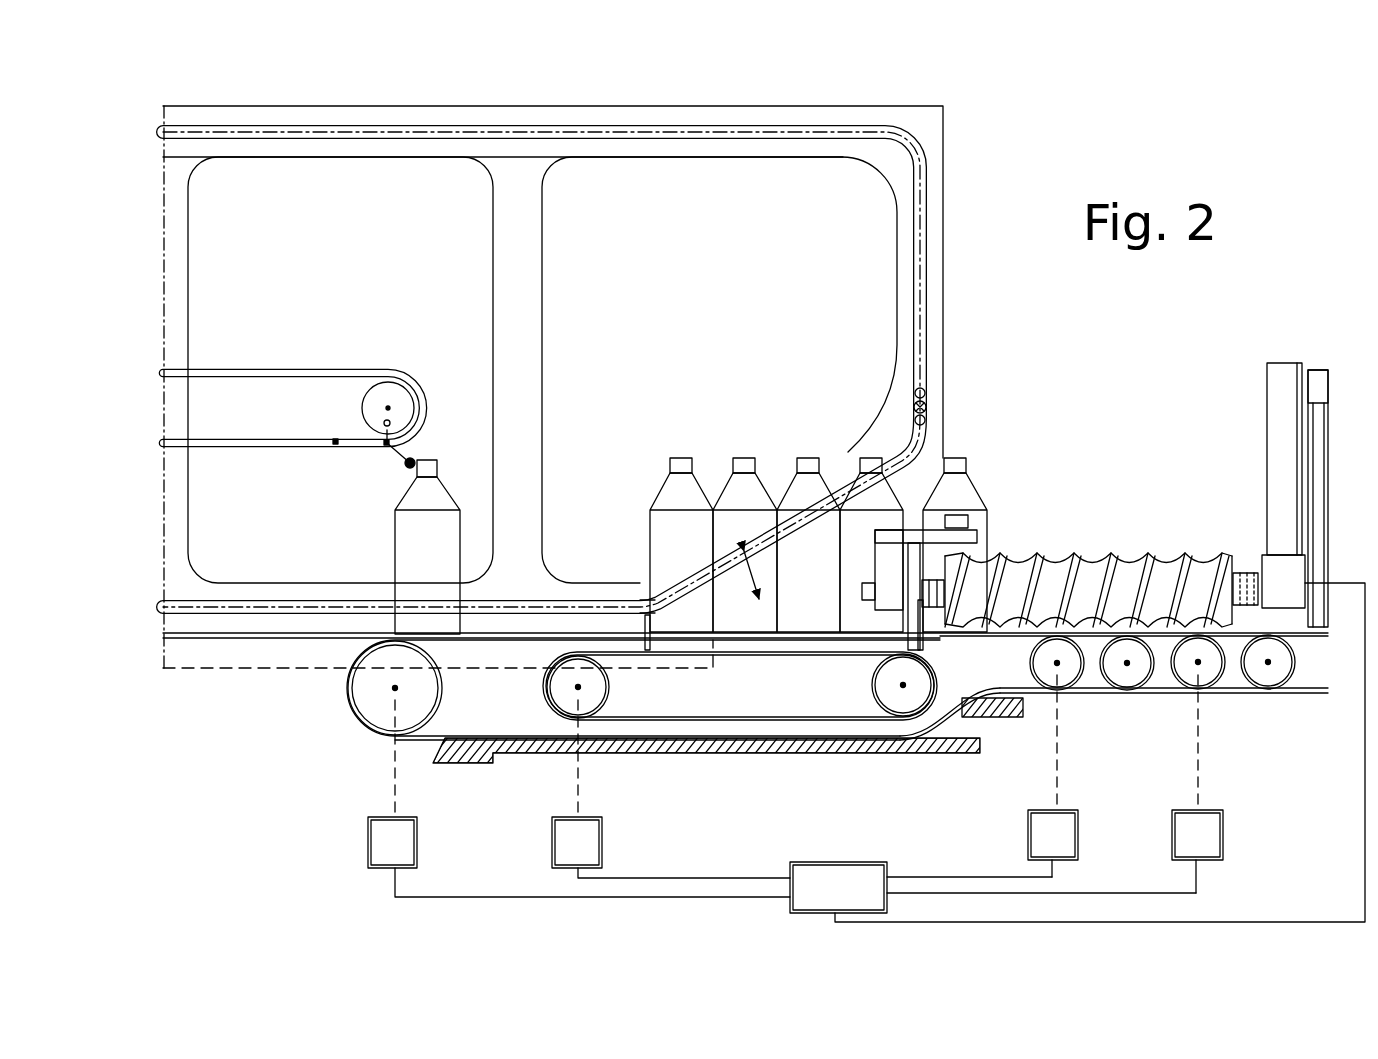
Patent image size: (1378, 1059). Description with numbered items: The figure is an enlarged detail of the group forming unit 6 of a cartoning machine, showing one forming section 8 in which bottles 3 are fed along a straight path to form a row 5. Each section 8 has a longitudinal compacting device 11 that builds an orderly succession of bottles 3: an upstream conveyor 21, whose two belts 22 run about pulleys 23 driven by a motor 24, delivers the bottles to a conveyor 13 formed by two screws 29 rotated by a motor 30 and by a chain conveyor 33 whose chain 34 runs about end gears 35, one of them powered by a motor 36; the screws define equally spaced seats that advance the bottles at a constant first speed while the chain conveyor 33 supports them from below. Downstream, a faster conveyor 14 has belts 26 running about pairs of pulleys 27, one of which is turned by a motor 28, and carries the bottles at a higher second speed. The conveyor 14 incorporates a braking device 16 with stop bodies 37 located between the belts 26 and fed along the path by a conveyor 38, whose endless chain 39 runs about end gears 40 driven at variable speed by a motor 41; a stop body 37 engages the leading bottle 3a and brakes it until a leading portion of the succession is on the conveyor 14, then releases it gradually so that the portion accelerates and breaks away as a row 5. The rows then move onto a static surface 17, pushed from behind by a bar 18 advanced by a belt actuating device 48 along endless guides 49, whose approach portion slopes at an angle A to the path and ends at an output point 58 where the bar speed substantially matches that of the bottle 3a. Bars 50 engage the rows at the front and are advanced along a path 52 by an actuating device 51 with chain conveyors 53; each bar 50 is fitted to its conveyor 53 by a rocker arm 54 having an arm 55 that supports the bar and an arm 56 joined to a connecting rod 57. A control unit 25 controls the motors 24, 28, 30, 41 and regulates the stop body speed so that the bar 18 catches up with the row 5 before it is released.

The bottles 3 is at (430, 495).
The leading bottle 3a is at (960, 466).
The row 5 is at (738, 440).
The group forming unit 6 is at (955, 205).
The forming section 8 is at (810, 332).
The longitudinal compacting device 11 is at (1048, 478).
The conveyor 13 is at (1100, 535).
The conveyor 14 is at (590, 565).
The braking device 16 is at (540, 700).
The static surface 17 is at (248, 640).
The bar 18 is at (928, 407).
The conveyor 21 is at (1320, 705).
The belts 22 is at (1320, 633).
The pulleys 23 is at (1208, 668).
The motor 24 is at (1190, 825).
The control unit 25 is at (843, 885).
The belts 26 is at (525, 632).
The pulleys 27 is at (370, 690).
The motor 28 is at (400, 845).
The screws 29 is at (1115, 578).
The motor 30 is at (1285, 585).
The chain conveyor 33 is at (1125, 680).
The chain 34 is at (1168, 640).
The end gears 35 is at (1062, 668).
The motor 36 is at (1050, 835).
The stop bodies 37 is at (655, 645).
The conveyor 38 is at (943, 690).
The endless chain 39 is at (730, 718).
The end gears 40 is at (592, 690).
The motor 41 is at (585, 838).
The belt actuating device 48 is at (757, 103).
The endless guides 49 is at (817, 133).
The bars 50 is at (412, 462).
The actuating device 51 is at (327, 340).
The path 52 is at (412, 378).
The chain conveyors 53 is at (302, 360).
The rocker arm 54 is at (385, 458).
The arm 55 is at (398, 458).
The arm 56 is at (335, 442).
The connecting rod 57 is at (382, 432).
The output point 58 is at (640, 598).
The slope angle A is at (762, 580).